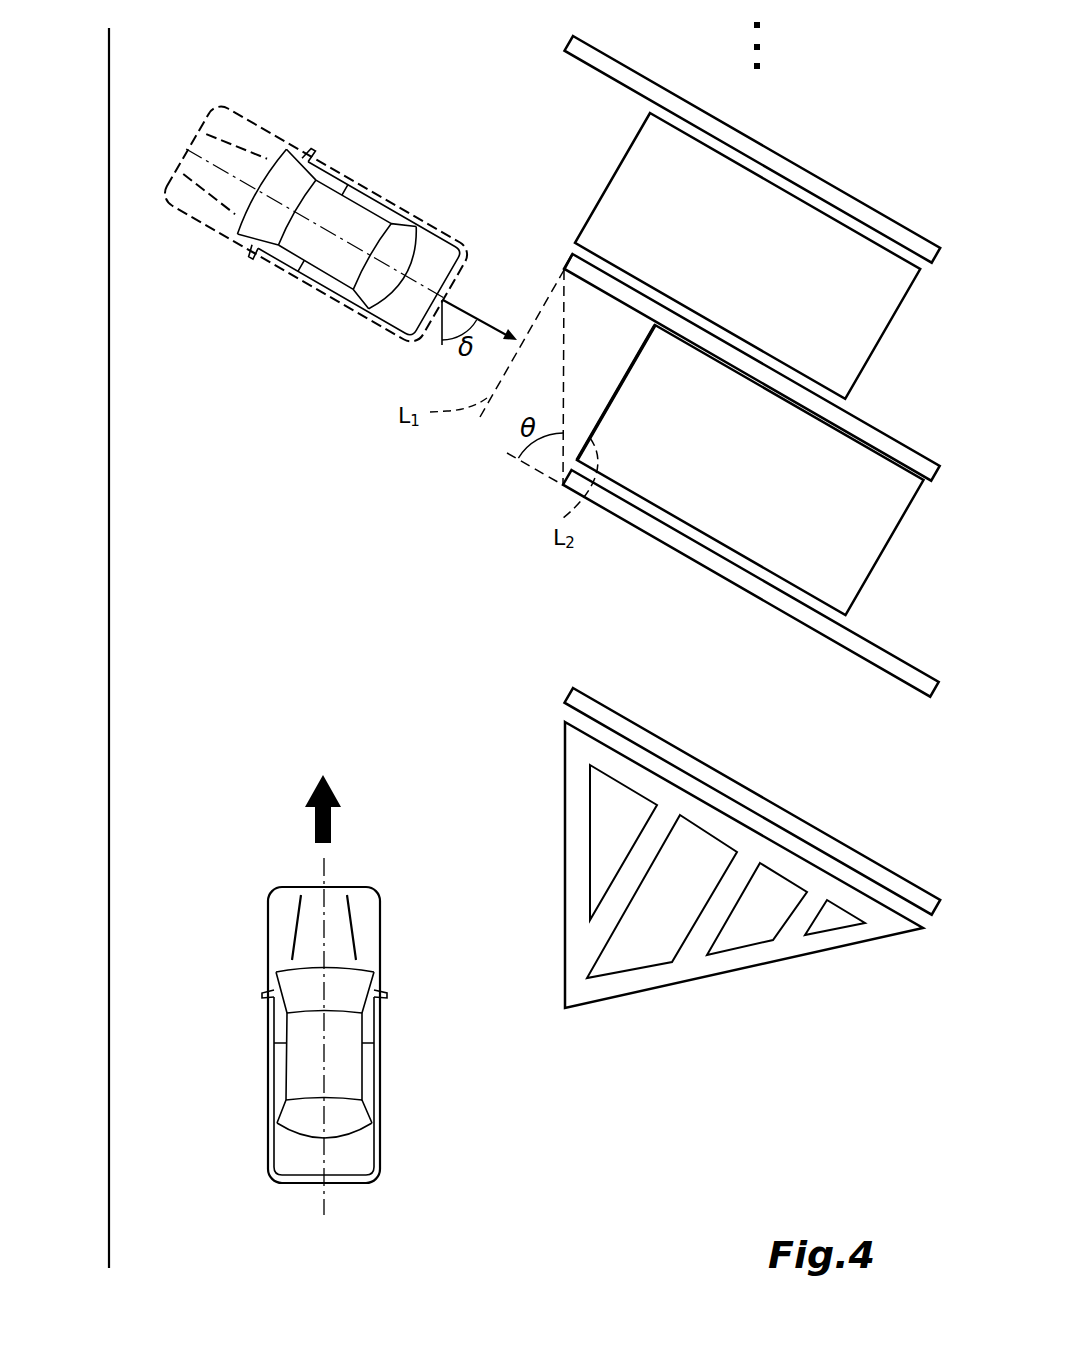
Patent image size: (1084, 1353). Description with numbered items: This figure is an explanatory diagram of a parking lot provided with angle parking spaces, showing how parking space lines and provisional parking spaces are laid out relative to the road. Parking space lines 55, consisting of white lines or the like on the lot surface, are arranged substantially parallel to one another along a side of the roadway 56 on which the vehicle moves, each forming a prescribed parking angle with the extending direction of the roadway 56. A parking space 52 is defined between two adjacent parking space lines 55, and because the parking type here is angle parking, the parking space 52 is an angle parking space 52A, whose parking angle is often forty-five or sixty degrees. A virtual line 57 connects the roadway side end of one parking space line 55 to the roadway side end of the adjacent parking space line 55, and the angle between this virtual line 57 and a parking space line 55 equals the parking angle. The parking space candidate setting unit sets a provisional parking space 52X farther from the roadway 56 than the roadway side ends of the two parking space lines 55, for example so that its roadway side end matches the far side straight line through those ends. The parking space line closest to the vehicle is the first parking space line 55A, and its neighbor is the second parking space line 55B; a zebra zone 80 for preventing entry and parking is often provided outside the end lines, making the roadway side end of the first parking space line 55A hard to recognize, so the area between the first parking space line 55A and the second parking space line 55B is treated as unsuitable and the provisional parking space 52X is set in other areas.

The parking space line 55 is at (760, 150).
The first parking space line 55A is at (710, 560).
The second parking space line 55B is at (725, 785).
The parking space 52 is at (767, 389).
The angle parking space 52A is at (894, 573).
The provisional parking space 52X is at (883, 347).
The roadway 56 is at (168, 687).
The virtual line 57 is at (562, 300).
The zebra zone 80 is at (712, 970).